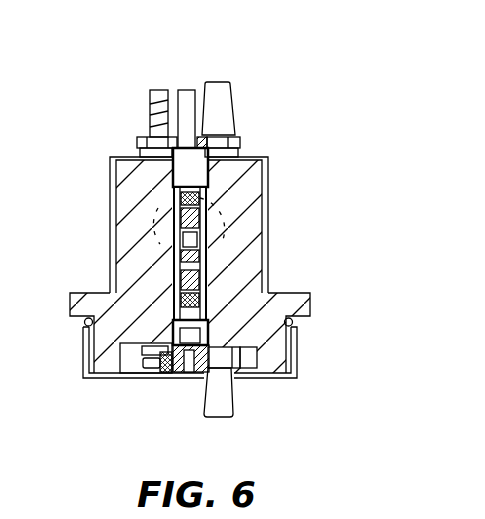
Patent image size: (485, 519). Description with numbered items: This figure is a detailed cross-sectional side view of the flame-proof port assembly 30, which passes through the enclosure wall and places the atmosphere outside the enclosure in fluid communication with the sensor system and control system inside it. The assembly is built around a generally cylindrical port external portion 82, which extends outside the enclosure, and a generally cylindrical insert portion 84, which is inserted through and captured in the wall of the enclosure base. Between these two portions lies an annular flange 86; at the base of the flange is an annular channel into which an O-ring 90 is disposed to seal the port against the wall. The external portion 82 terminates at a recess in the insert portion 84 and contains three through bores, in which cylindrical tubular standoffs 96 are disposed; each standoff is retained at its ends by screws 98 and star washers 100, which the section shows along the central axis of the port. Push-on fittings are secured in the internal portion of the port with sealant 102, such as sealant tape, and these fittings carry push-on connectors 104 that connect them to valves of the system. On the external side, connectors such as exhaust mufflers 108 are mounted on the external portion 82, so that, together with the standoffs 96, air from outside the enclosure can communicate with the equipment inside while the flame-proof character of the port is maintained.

The flame-proof port assembly 30 is at (210, 240).
The port external portion 82 is at (268, 190).
The insert portion 84 is at (83, 378).
The annular flange 86 is at (292, 294).
The O-ring 90 is at (292, 324).
The tubular standoffs 96 is at (173, 266).
The screws 98 is at (200, 200).
The star washers 100 is at (174, 294).
The sealant 102 is at (173, 142).
The push on connectors 104 is at (184, 90).
The exhaust mufflers 108 is at (237, 110).